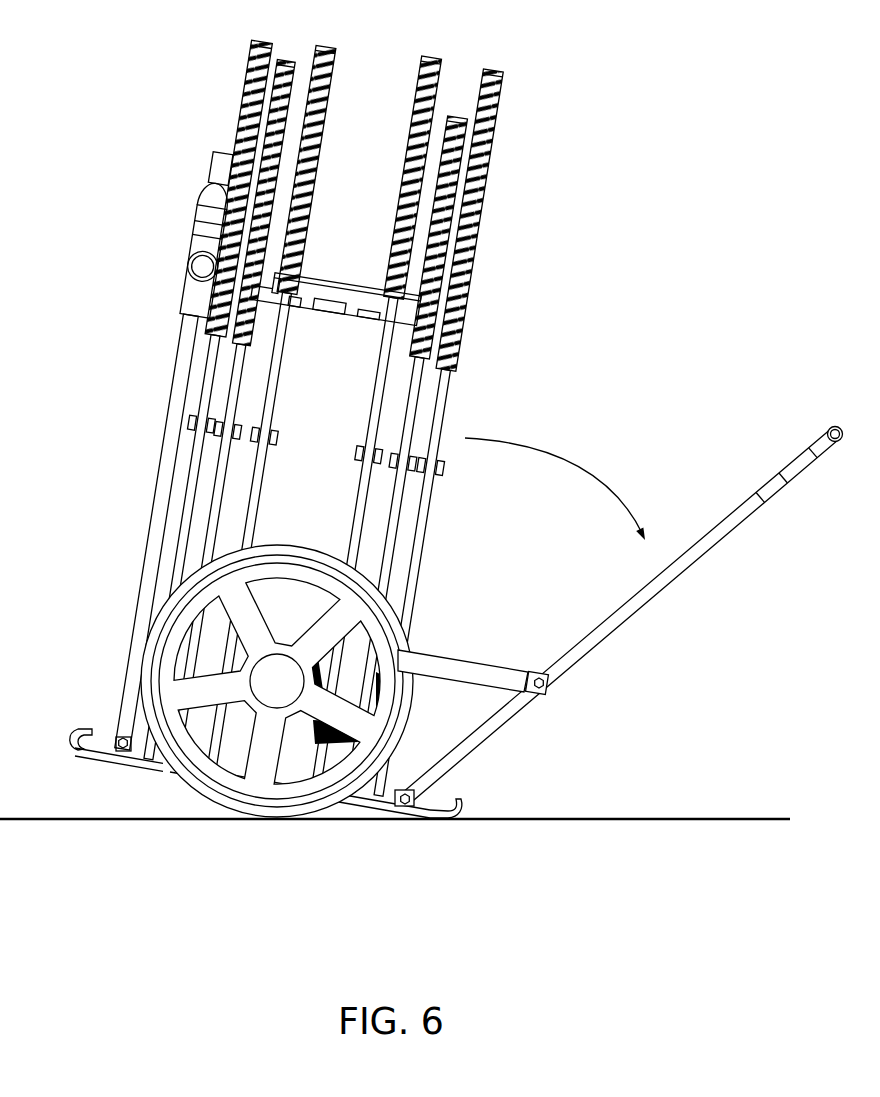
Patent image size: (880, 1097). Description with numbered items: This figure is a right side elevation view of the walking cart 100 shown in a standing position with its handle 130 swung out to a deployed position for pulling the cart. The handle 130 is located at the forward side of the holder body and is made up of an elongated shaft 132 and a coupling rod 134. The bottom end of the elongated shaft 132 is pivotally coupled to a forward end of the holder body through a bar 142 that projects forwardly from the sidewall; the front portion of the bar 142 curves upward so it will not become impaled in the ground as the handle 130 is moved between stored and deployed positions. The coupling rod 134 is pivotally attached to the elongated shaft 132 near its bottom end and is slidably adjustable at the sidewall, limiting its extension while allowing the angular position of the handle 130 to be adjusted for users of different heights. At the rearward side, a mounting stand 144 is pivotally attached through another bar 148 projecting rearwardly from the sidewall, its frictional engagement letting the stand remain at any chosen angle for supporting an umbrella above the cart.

The walking cart 100 is at (537, 41).
The handle 130 is at (708, 570).
The elongated shaft 132 is at (741, 501).
The coupling rod 134 is at (448, 655).
The bar 142 is at (440, 808).
The mounting stand 144 is at (207, 234).
The bar 148 is at (97, 742).